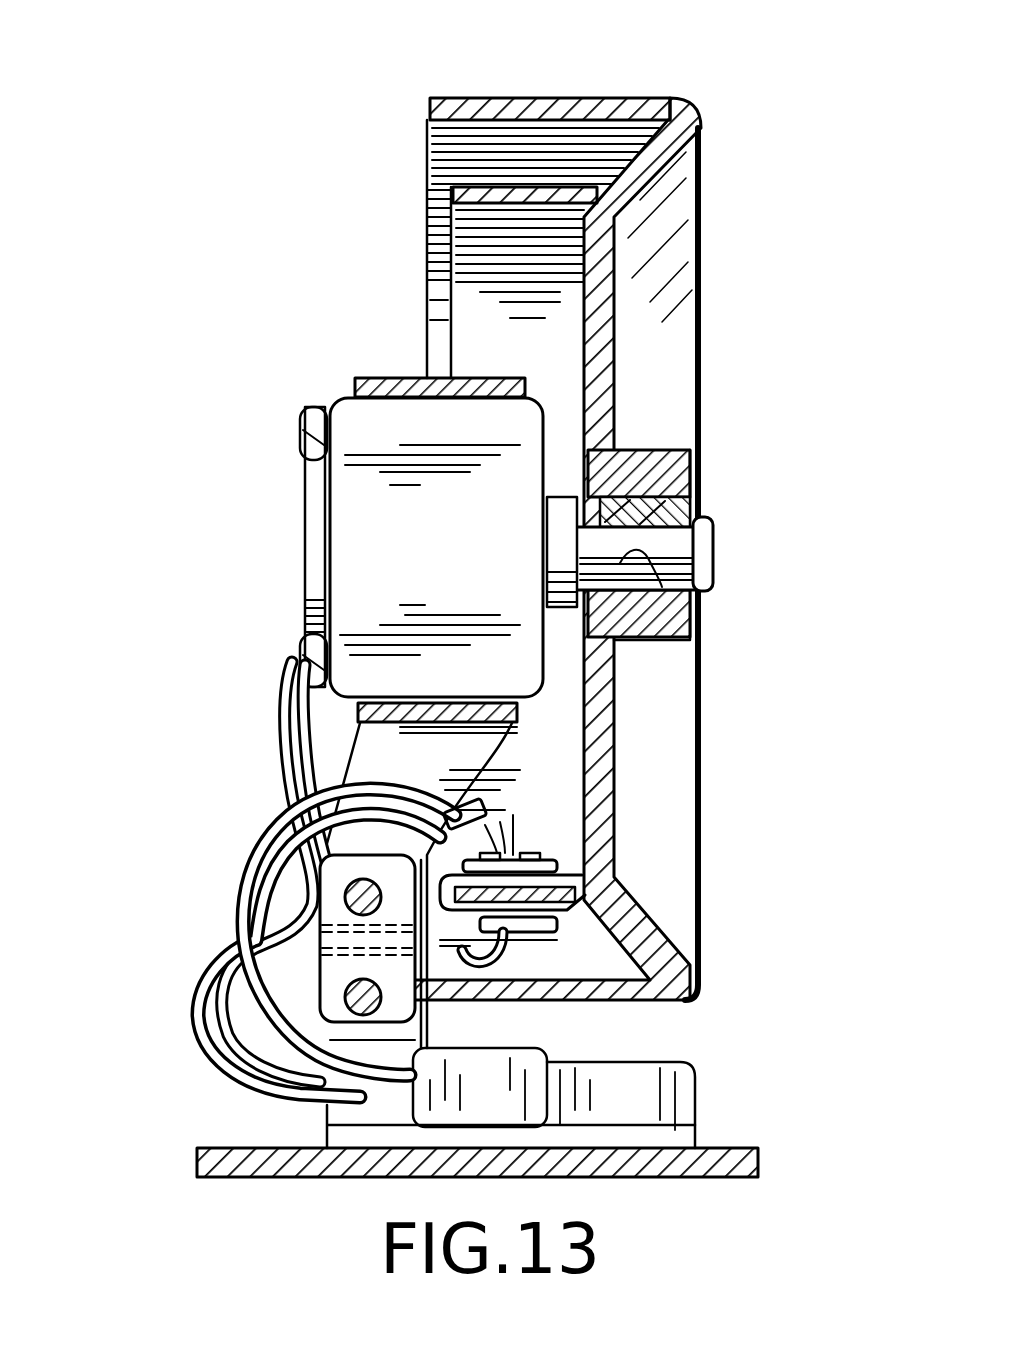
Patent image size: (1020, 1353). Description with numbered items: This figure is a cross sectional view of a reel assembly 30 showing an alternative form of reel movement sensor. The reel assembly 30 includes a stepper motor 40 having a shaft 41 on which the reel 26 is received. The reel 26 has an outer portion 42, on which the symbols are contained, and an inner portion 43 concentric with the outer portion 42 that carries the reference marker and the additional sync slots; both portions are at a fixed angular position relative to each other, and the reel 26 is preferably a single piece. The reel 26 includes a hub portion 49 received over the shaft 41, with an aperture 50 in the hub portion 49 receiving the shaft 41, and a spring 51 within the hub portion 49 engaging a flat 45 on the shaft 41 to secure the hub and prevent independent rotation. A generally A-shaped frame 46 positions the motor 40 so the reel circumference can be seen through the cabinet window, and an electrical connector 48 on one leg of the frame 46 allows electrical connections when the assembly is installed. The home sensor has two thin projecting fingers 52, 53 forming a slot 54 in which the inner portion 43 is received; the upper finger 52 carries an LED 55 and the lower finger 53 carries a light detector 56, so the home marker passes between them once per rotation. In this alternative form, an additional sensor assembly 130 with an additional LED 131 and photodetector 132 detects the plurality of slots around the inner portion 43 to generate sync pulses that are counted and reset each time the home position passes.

The reel 26 is at (700, 95).
The reel assembly 30 is at (230, 365).
The stepper motor 40 is at (347, 517).
The shaft 41 is at (698, 552).
The outer portion 42 is at (482, 107).
The inner portion 43 is at (547, 192).
The flat 45 is at (703, 578).
The frame 46 is at (367, 752).
The electrical connector 48 is at (378, 1113).
The hub portion 49 is at (653, 450).
The aperture 50 is at (693, 618).
The spring 51 is at (698, 503).
The upper finger 52 is at (480, 847).
The lower finger 53 is at (512, 935).
The slot 54 is at (560, 867).
The LED 55 is at (510, 830).
The light detector 56 is at (560, 924).
The sensor assembly 130 is at (318, 906).
The additional LED 131 is at (515, 815).
The photodetector 132 is at (462, 1000).